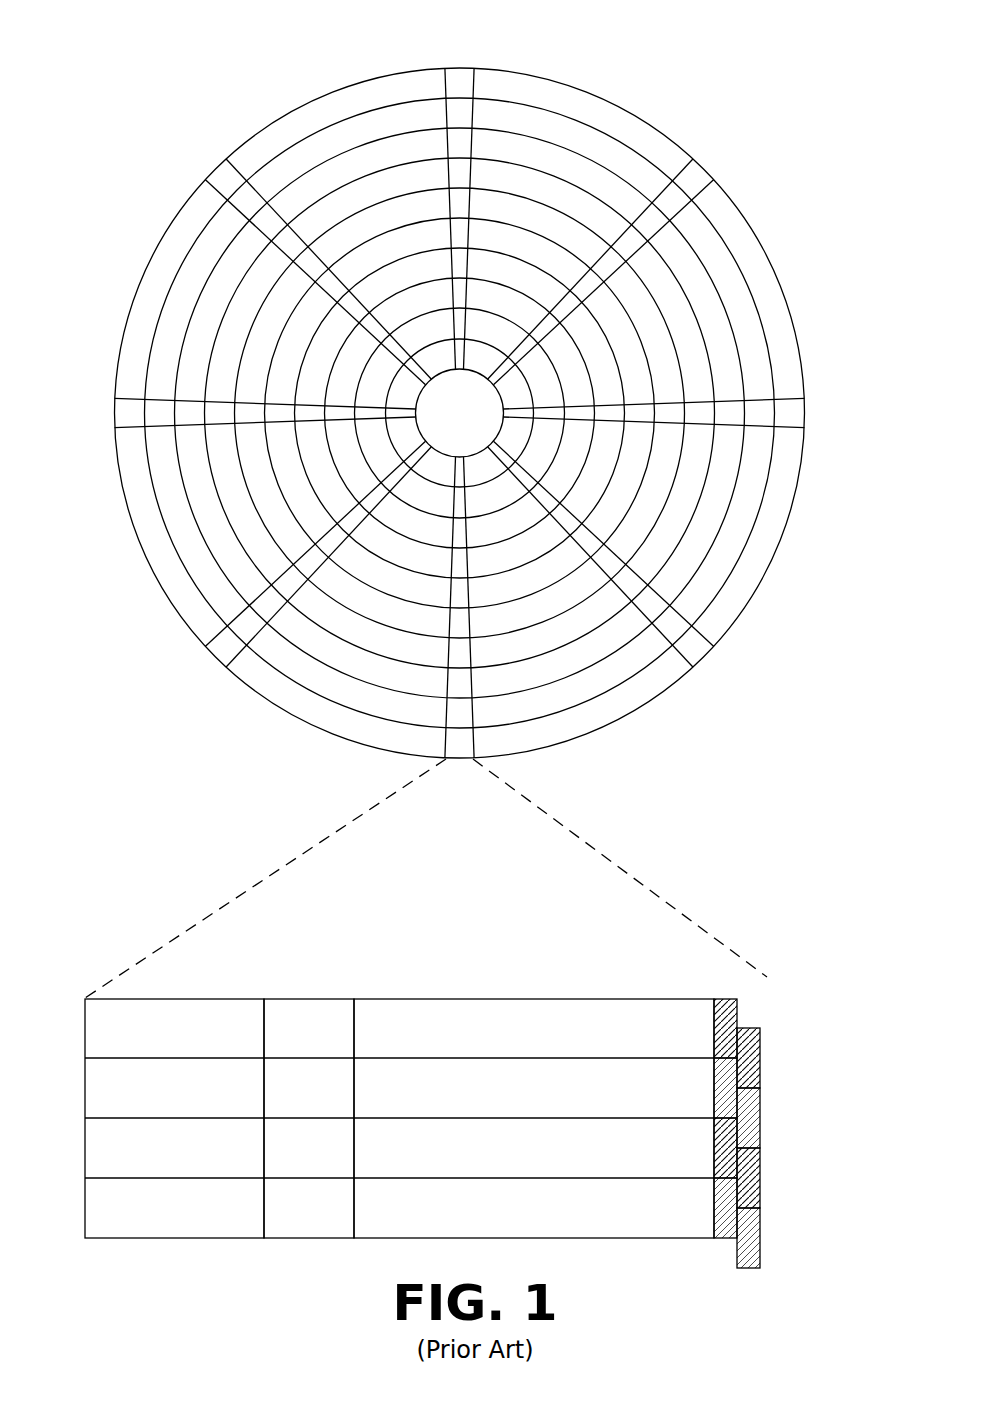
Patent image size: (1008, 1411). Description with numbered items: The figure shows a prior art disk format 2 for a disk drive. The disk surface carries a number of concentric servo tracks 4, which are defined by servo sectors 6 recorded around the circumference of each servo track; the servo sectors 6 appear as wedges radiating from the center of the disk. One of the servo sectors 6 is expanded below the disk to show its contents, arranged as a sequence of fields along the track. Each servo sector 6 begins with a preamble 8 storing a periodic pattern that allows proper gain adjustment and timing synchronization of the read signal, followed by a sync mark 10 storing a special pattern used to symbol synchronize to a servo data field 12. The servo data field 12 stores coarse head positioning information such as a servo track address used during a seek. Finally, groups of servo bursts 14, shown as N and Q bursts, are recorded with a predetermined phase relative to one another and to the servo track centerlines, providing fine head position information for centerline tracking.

The disk format 2 is at (203, 71).
The servo tracks 4 is at (577, 138).
The servo sectors 6 is at (306, 838).
The preamble 8 is at (185, 999).
The sync mark 10 is at (313, 999).
The servo data field 12 is at (523, 999).
The servo bursts 14 is at (756, 996).